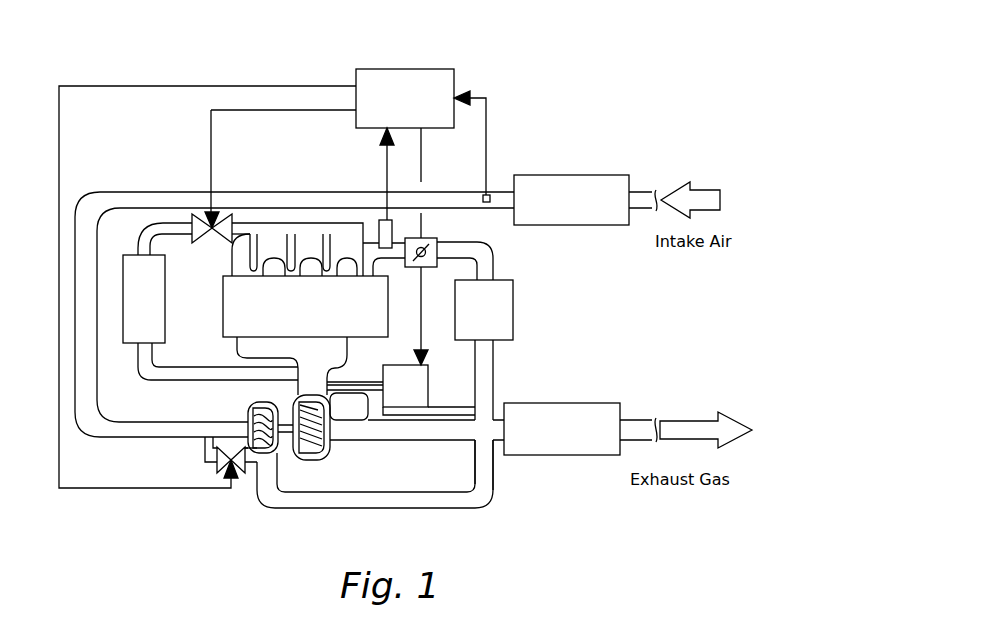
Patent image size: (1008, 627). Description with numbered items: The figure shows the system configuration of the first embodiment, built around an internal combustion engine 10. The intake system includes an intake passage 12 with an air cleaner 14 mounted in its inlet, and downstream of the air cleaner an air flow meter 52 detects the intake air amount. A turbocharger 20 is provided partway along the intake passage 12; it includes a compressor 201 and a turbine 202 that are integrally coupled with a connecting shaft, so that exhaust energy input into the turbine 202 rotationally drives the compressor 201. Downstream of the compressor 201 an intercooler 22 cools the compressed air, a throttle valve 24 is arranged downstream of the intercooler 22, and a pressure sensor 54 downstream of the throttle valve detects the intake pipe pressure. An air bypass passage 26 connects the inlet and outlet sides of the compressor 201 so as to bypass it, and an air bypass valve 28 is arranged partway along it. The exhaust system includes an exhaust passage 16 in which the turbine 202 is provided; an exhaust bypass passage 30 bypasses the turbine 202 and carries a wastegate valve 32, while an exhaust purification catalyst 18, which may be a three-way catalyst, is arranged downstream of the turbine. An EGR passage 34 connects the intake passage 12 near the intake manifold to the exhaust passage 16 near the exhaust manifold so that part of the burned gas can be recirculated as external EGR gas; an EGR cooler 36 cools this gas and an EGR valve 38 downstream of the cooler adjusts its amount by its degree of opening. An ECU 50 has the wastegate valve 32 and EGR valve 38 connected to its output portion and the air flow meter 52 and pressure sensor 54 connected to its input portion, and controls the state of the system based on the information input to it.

The internal combustion engine 10 is at (213, 337).
The intake passage 12 is at (130, 192).
The air cleaner 14 is at (614, 175).
The exhaust passage 16 is at (444, 440).
The exhaust purification catalyst 18 is at (590, 403).
The turbocharger 20 is at (295, 439).
The compressor 201 is at (252, 405).
The turbine 202 is at (297, 454).
The intercooler 22 is at (513, 310).
The throttle valve 24 is at (433, 240).
The air bypass passage 26 is at (217, 455).
The air bypass valve 28 is at (226, 470).
The exhaust bypass passage 30 is at (392, 415).
The wastegate valve 32 is at (428, 383).
The EGR passage 34 is at (137, 380).
The EGR cooler 36 is at (132, 255).
The EGR valve 38 is at (200, 212).
The ECU 50 is at (443, 69).
The air flow meter 52 is at (483, 196).
The pressure sensor 54 is at (379, 226).